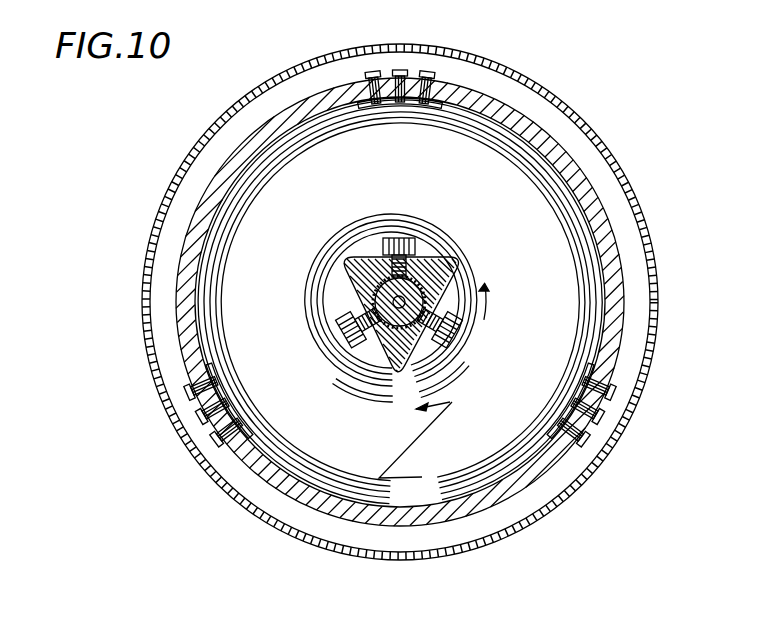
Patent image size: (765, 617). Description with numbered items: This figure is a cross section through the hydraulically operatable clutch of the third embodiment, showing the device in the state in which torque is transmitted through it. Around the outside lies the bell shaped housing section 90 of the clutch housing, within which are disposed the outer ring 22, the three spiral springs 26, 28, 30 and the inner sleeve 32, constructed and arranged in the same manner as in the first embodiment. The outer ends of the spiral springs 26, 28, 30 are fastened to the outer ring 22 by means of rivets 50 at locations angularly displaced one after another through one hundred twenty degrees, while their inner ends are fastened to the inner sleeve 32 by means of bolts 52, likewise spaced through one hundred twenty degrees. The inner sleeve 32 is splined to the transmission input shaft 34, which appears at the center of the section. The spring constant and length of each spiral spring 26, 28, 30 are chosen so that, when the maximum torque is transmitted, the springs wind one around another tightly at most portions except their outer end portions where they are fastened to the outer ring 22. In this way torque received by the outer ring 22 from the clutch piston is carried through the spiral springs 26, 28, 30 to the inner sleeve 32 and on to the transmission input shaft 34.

The outer ring 22 is at (503, 113).
The spiral spring 26 is at (580, 213).
The spiral spring 28 is at (348, 493).
The spiral spring 30 is at (217, 217).
The inner sleeve 32 is at (438, 276).
The transmission input shaft 34 is at (410, 299).
The rivets 50 is at (427, 71).
The bolts 52 is at (398, 240).
The bell shaped housing section 90 is at (565, 103).